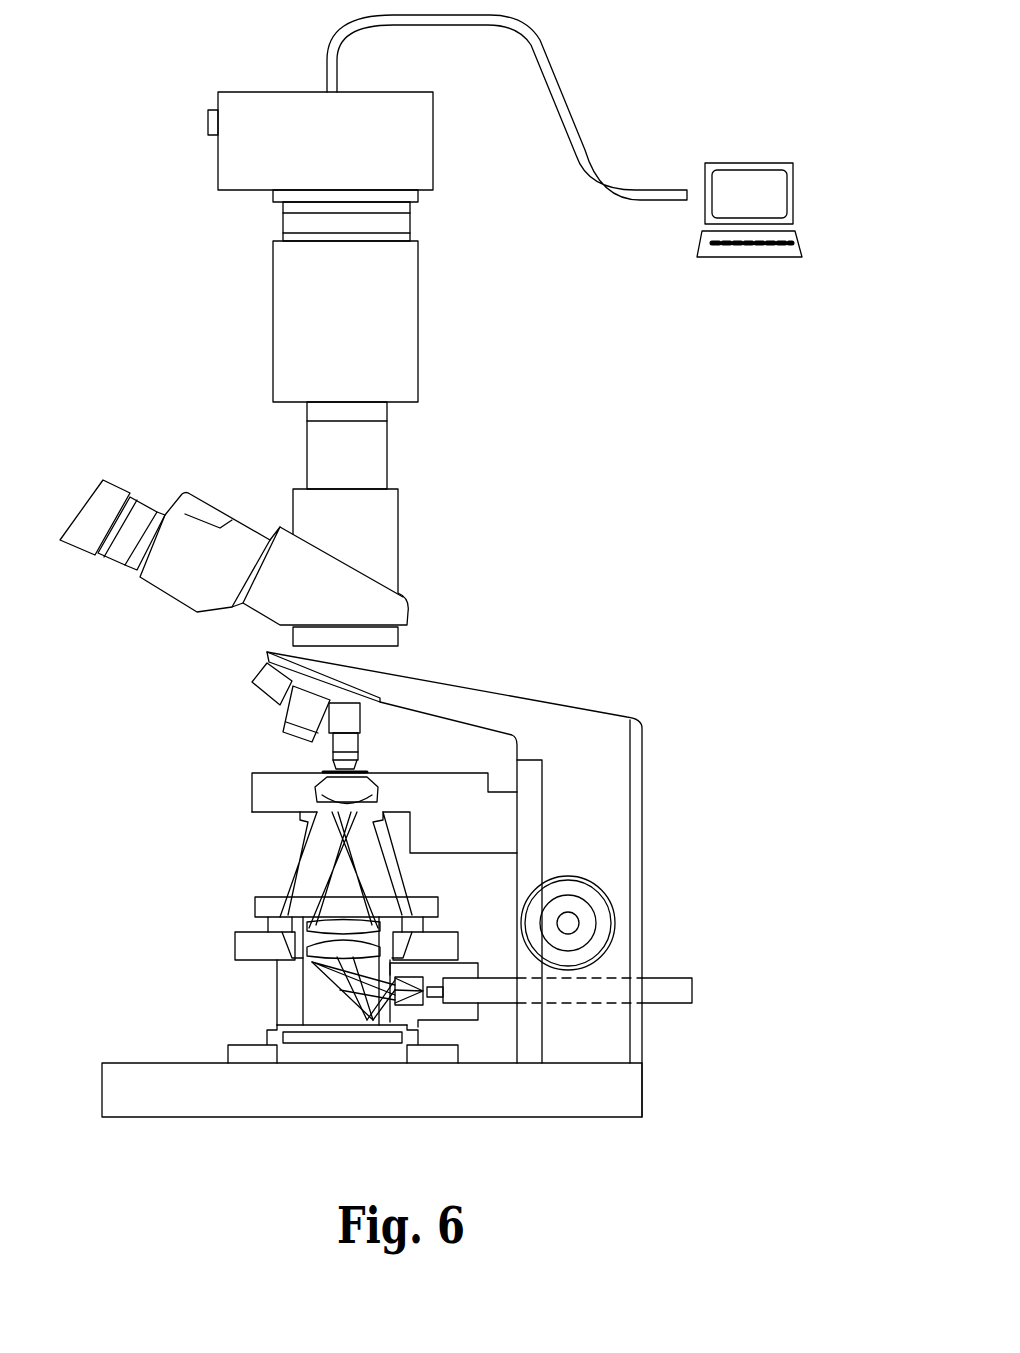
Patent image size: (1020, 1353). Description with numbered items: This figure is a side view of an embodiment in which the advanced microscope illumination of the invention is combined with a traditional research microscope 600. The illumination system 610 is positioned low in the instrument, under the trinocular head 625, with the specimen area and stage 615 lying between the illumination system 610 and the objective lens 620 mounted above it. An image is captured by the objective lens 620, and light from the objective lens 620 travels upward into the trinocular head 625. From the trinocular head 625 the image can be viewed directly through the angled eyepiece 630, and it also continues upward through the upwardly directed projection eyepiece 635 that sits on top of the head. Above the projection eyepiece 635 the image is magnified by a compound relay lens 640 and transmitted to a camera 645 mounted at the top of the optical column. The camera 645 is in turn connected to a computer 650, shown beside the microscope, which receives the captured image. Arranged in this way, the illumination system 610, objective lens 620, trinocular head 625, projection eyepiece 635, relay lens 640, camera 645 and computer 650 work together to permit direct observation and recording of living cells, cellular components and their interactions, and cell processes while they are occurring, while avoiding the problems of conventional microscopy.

The traditional research microscope 600 is at (600, 643).
The illumination system 610 is at (297, 858).
The stage 615 is at (250, 789).
The objective lens 620 is at (337, 740).
The trinocular head 625 is at (388, 600).
The eyepiece 630 is at (105, 480).
The upwardly directed projection eyepiece 635 is at (377, 453).
The compound relay lens 640 is at (412, 318).
The camera 645 is at (423, 130).
The computer 650 is at (792, 186).